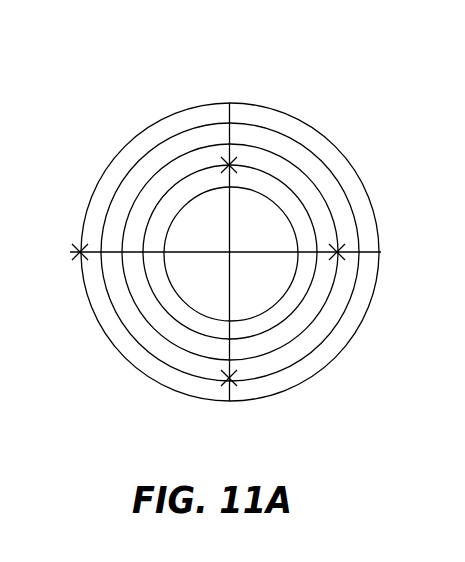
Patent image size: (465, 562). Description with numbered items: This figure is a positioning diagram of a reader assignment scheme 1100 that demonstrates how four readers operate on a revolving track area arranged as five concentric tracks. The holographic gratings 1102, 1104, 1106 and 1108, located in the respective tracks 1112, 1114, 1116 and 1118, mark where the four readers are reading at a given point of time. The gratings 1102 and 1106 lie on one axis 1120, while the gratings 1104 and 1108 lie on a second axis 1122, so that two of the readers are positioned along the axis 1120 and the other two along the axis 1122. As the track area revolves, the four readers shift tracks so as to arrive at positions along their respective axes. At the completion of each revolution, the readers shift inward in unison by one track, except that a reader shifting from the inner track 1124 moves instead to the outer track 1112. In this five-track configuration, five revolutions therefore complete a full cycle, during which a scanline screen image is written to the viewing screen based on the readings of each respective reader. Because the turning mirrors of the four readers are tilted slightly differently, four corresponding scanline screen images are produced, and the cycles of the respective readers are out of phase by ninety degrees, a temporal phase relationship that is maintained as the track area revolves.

The reader assignment scheme 1100 is at (195, 88).
The holographic grating 1102 is at (80, 252).
The holographic grating 1104 is at (232, 379).
The holographic grating 1106 is at (339, 256).
The holographic grating 1108 is at (222, 166).
The outer track 1112 is at (125, 360).
The track 1114 is at (187, 370).
The track 1116 is at (277, 350).
The track 1118 is at (293, 310).
The axis 1120 is at (273, 250).
The axis 1122 is at (232, 208).
The inner track 1124 is at (293, 282).